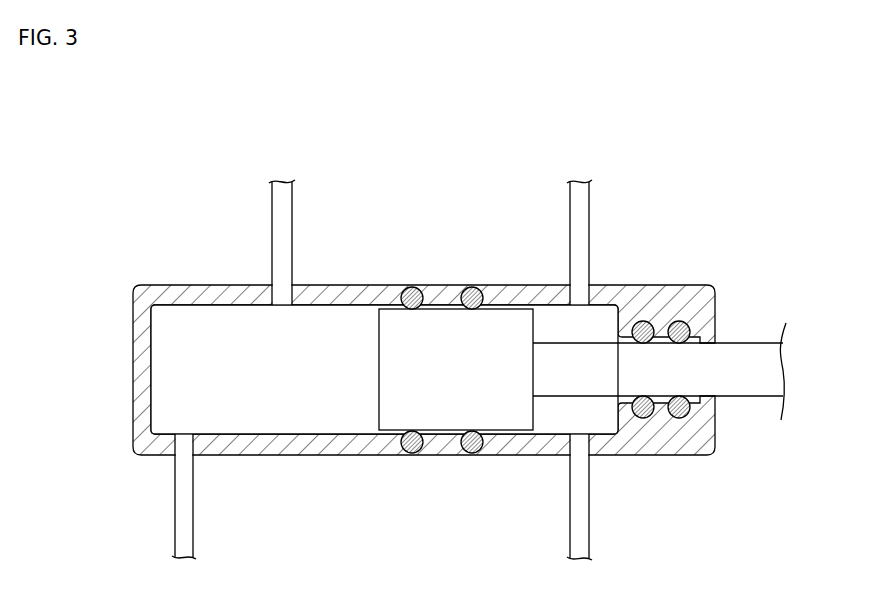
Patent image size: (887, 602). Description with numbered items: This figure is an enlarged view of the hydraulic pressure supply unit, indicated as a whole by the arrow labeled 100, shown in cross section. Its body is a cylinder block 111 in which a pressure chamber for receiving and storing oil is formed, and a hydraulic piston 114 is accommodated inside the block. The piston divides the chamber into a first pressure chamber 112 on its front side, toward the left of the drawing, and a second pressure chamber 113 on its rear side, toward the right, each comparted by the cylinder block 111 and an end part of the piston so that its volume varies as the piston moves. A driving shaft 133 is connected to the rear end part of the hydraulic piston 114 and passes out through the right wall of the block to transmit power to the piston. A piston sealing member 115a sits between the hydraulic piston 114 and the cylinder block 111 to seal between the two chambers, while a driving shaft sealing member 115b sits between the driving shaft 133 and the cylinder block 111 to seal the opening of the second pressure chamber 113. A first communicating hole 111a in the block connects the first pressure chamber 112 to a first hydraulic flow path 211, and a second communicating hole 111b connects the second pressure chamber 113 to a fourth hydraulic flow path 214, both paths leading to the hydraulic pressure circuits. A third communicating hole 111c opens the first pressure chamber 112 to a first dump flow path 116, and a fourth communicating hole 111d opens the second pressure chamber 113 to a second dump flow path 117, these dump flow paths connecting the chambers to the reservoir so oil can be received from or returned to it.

The actuator assembly 100 is at (126, 241).
The cylinder block 111 is at (140, 380).
The first pressure chamber 112 is at (174, 353).
The second pressure chamber 113 is at (583, 412).
The hydraulic piston 114 is at (512, 322).
The piston sealing member 115a is at (412, 291).
The driving shaft sealing member 115b is at (680, 322).
The first dump flow path 116 is at (277, 215).
The second dump flow path 117 is at (573, 213).
The first communicating hole 111a is at (182, 450).
The second communicating hole 111b is at (577, 448).
The third communicating hole 111c is at (288, 292).
The fourth communicating hole 111d is at (590, 296).
The driving shaft 133 is at (750, 343).
The first hydraulic flow path 211 is at (178, 533).
The fourth hydraulic flow path 214 is at (578, 533).